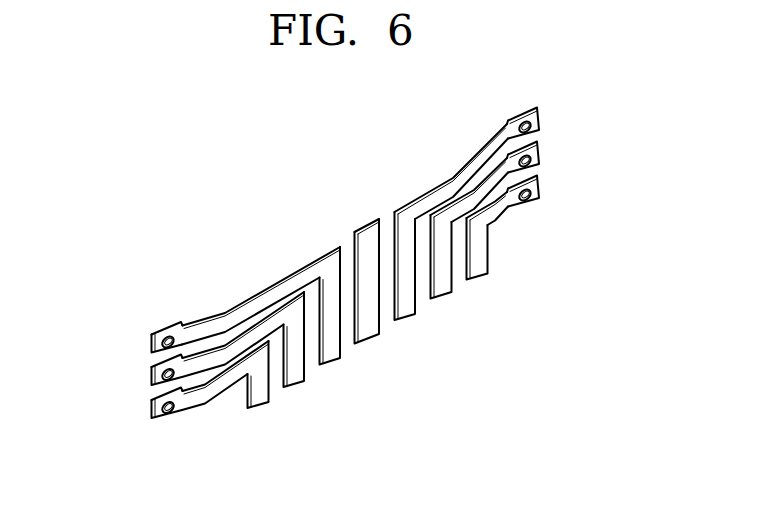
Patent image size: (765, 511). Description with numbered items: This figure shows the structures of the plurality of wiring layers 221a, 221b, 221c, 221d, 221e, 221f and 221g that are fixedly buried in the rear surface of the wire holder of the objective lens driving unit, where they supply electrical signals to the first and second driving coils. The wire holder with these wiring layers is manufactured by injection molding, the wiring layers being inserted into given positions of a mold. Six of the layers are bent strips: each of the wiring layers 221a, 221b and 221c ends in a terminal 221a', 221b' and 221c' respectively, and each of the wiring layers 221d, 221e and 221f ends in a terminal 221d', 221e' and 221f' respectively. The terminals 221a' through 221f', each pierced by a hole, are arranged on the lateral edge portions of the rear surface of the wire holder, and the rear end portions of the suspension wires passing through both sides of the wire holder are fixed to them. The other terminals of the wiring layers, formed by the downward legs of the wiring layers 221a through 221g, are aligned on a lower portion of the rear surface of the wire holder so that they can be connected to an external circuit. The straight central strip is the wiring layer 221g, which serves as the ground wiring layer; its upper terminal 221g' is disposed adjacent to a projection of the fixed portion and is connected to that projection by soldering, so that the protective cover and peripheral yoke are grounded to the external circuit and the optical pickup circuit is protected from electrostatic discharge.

The wiring layer 221a is at (233, 406).
The terminal 221a' is at (126, 415).
The wiring layer 221b is at (259, 371).
The terminal 221b' is at (125, 377).
The wiring layer 221c is at (284, 339).
The terminal 221c' is at (124, 341).
The wiring layer 221d is at (452, 248).
The terminal 221d' is at (562, 122).
The wiring layer 221e is at (473, 250).
The terminal 221e' is at (563, 155).
The wiring layer 221f is at (511, 254).
The terminal 221f' is at (565, 190).
The ground wiring layer 221g is at (382, 282).
The upper terminal 221g' is at (362, 199).